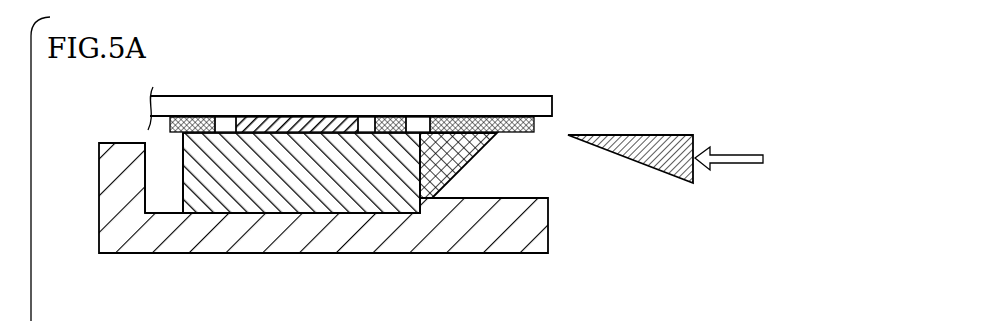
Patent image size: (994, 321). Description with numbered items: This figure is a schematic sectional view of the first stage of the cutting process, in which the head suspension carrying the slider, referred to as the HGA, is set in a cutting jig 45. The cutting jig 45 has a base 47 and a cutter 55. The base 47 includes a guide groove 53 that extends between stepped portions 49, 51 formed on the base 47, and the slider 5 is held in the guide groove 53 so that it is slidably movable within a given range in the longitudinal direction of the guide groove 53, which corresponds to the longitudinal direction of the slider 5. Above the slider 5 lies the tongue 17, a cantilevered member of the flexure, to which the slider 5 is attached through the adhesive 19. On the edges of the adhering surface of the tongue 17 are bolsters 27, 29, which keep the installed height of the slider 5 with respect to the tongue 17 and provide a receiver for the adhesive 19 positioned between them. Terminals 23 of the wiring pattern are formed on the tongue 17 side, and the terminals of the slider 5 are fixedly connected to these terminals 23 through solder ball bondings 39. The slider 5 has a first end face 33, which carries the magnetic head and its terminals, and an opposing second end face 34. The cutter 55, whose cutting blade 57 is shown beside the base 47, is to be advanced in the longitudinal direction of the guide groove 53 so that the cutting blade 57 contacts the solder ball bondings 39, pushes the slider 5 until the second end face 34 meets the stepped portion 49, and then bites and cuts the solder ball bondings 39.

The slider 5 is at (282, 177).
The tongue 17 is at (398, 105).
The adhesive 19 is at (307, 117).
The terminals 23 is at (484, 117).
The bolster 27 is at (385, 117).
The bolster 29 is at (205, 117).
The first end face 33 is at (440, 198).
The second end face 34 is at (183, 172).
The solder ball bonding (SBB) 39 is at (470, 157).
The cutting jig 45 is at (618, 65).
The base 47 is at (548, 226).
The stepped portion 49 is at (146, 172).
The stepped portion 51 is at (418, 198).
The guide groove 53 is at (333, 213).
The cutter 55 is at (638, 134).
The cutting blade 57 is at (668, 134).
The HGA (head gimbal assembly) HGA is at (565, 87).